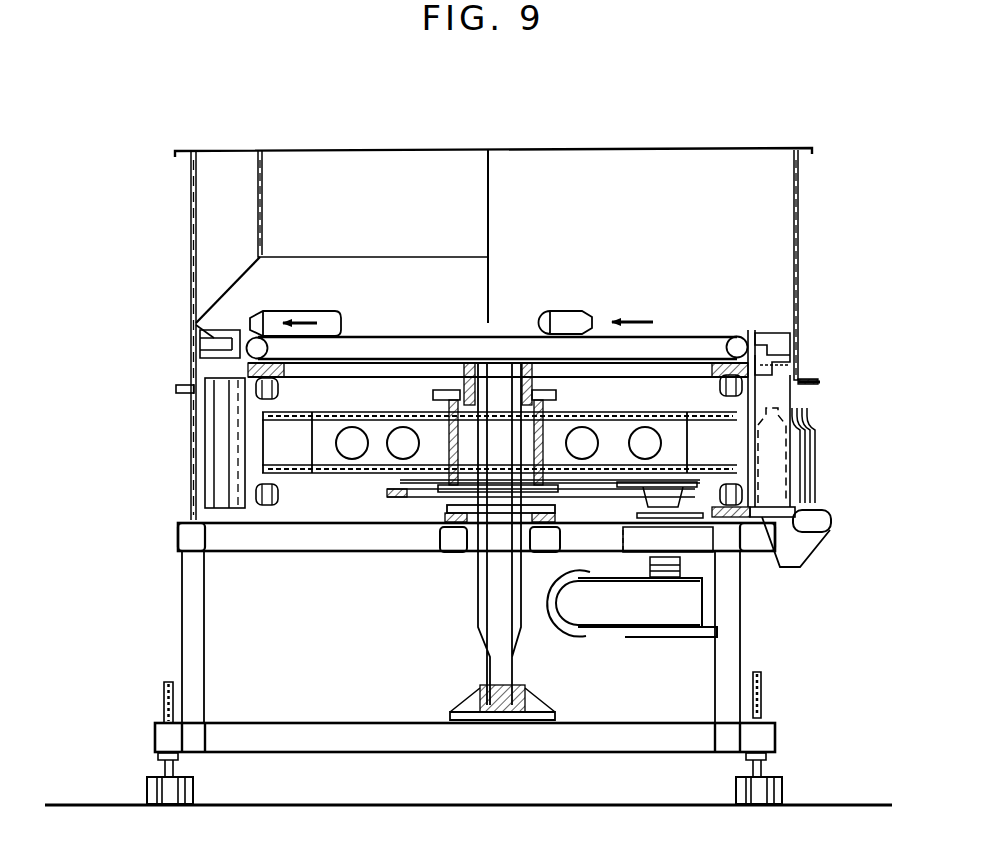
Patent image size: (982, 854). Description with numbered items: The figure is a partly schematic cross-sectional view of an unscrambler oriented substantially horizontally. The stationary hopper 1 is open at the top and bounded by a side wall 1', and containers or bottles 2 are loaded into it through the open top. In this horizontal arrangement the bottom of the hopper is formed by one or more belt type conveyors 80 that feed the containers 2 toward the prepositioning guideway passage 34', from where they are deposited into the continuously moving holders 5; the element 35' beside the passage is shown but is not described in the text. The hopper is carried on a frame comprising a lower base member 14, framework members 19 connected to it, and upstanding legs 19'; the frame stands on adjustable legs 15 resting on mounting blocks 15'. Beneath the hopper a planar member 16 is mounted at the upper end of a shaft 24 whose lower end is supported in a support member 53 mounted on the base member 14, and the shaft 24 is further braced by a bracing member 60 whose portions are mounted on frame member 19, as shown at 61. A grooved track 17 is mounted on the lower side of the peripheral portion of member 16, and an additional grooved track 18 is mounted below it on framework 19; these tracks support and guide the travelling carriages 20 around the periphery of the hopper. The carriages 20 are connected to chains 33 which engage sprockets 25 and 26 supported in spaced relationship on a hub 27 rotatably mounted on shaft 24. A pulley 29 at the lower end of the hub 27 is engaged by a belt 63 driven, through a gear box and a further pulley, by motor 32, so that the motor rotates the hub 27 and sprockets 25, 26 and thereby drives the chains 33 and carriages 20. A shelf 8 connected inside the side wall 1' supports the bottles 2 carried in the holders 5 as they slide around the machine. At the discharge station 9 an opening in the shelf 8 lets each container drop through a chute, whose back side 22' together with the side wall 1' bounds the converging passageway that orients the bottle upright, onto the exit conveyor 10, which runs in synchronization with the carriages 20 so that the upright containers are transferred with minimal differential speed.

The hopper 1 is at (493, 295).
The side wall 1' is at (823, 267).
The containers 2 is at (200, 332).
The holders 5 is at (228, 345).
The shelf 8 is at (192, 384).
The discharge station 9 is at (822, 373).
The exit conveyor 10 is at (808, 548).
The lower base member 14 is at (345, 723).
The adjustable legs 15 is at (494, 697).
The mounting blocks 15' is at (503, 778).
The planar member 16 is at (672, 352).
The grooved track 17 is at (292, 372).
The additional grooved track 18 is at (740, 337).
The framework members 19 is at (476, 559).
The upstanding legs 19' is at (460, 637).
The travelling carriages 20 is at (253, 448).
The back side of chute 22' is at (177, 444).
The shaft 24 is at (478, 615).
The sprocket 25 is at (638, 413).
The sprocket 26 is at (628, 458).
The hub 27 is at (440, 478).
The pulley 29 is at (405, 498).
The motor 32 is at (612, 617).
The chains 33 is at (750, 410).
The prepositioning guideway passage 34' is at (228, 283).
The partition wall 35' is at (373, 204).
The support member 53 is at (528, 700).
The bracing member 60 is at (458, 516).
The mounting portions of bracing member 61 is at (454, 548).
The belt 63 is at (626, 492).
The belt type conveyors 80 is at (493, 335).